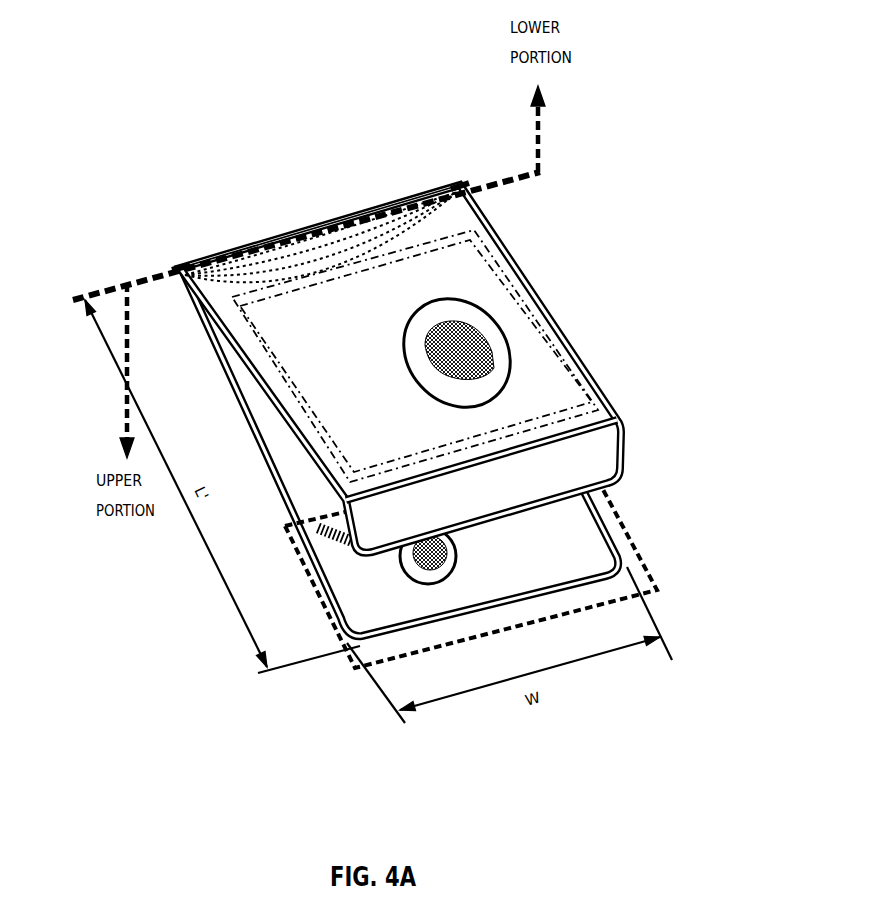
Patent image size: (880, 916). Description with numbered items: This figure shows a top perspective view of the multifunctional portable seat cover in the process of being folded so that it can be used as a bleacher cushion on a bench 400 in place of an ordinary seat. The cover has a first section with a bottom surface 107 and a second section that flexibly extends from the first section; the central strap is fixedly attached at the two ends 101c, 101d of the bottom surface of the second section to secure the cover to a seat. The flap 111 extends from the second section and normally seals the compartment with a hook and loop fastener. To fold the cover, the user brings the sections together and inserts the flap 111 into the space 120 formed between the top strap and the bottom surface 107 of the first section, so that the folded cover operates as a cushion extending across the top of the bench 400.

The bench 400 is at (114, 116).
The end of the bottom surface of the second section 101c is at (460, 183).
The end of the bottom surface of the second section 101d is at (181, 262).
The bottom surface of the first section 107 is at (349, 583).
The flap 111 is at (609, 457).
The space 120 is at (652, 545).